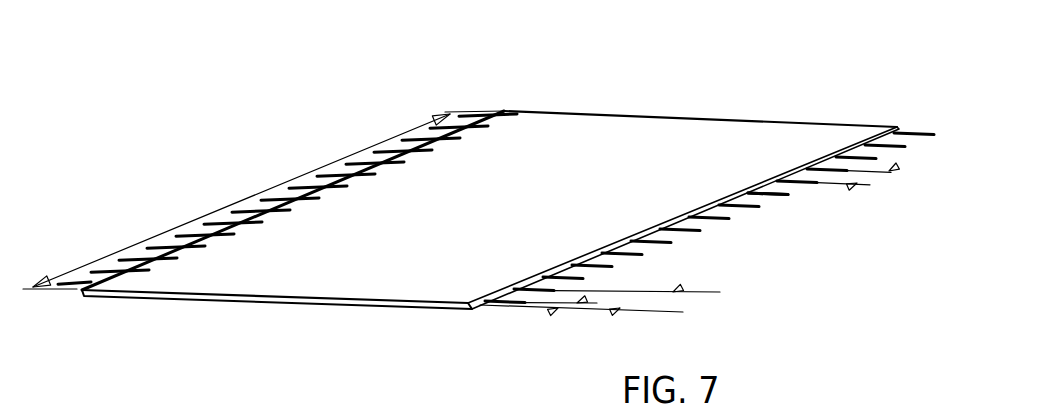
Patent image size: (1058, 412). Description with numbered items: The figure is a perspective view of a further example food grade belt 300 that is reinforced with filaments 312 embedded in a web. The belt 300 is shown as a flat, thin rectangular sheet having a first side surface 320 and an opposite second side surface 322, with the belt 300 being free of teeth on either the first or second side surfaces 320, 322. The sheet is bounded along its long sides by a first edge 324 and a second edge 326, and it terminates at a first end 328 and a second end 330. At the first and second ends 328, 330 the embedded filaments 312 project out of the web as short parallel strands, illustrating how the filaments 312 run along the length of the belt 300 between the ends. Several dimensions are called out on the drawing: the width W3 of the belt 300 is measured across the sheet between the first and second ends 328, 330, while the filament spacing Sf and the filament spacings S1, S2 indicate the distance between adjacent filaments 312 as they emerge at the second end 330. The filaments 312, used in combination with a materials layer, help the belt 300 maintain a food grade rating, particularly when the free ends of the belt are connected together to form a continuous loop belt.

The food grade belt 300 is at (478, 196).
The filaments 312 is at (779, 194).
The first side surface 320 is at (490, 216).
The second side surface 322 is at (370, 307).
The first edge 324 is at (690, 118).
The second edge 326 is at (218, 292).
The first end 328 is at (133, 264).
The second end 330 is at (602, 272).
The width W3 is at (264, 200).
The filament spacing Sf is at (820, 199).
The filament spacing S1 is at (682, 287).
The filament spacing S2 is at (594, 329).